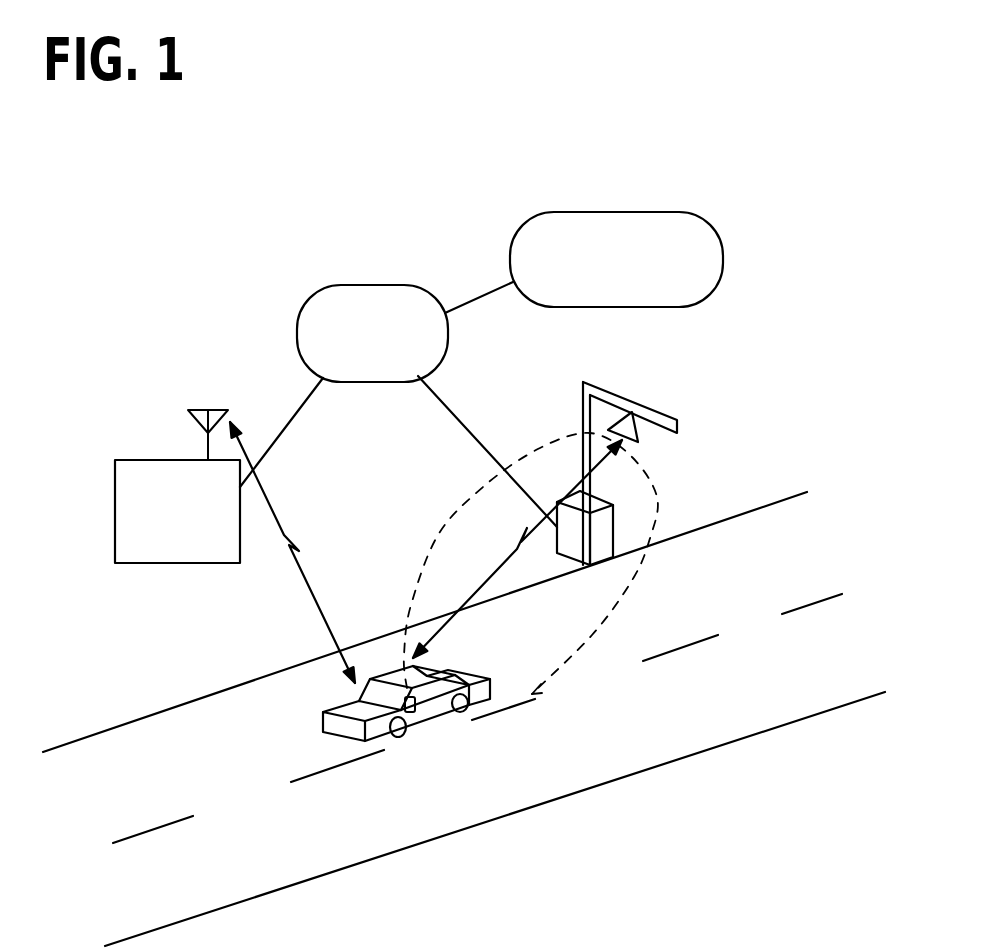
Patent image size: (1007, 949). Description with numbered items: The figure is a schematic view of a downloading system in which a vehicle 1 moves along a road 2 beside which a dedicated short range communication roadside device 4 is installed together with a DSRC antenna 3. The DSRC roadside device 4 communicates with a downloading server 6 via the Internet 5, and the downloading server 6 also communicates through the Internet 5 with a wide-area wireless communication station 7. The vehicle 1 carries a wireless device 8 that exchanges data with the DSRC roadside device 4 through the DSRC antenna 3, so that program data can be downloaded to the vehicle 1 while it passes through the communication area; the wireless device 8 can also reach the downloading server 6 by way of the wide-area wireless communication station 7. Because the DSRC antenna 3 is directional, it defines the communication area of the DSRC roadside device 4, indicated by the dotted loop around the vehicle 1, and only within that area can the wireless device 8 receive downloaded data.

The vehicle 1 is at (344, 731).
The road 2 is at (73, 750).
The DSRC antenna 3 is at (640, 431).
The DSRC roadside device 4 is at (616, 530).
The Internet 5 is at (375, 285).
The downloading server 6 is at (615, 212).
The wide-area wireless communication station 7 is at (115, 508).
The wireless device 8 is at (418, 713).